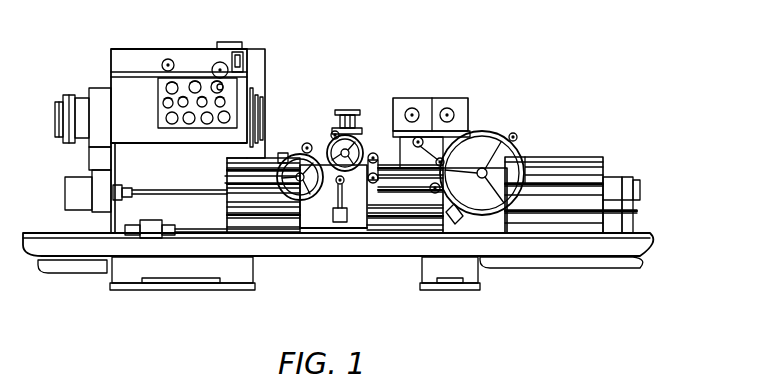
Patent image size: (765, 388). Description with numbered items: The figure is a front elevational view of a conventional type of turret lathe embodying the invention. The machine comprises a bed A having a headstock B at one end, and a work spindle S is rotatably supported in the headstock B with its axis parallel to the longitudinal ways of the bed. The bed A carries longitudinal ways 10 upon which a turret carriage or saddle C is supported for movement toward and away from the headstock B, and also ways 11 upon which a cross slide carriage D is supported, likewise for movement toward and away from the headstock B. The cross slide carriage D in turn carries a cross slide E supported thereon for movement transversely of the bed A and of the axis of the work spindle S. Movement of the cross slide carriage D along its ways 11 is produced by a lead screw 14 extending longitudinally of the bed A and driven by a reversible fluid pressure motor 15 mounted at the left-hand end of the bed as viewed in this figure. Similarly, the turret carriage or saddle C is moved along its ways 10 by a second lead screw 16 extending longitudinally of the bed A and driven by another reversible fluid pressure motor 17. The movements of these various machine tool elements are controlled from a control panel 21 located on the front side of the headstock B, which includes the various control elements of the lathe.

The bed A is at (310, 251).
The headstock B is at (138, 66).
The turret carriage or saddle C is at (500, 152).
The cross slide carriage D is at (357, 220).
The cross slide E is at (363, 110).
The work spindle S is at (266, 110).
The longitudinal ways 10 is at (593, 158).
The ways 11 is at (231, 172).
The lead screw 14 is at (182, 190).
The reversible fluid pressure motor 15 is at (67, 190).
The lead screw 16 is at (215, 229).
The reversible fluid pressure motor 17 is at (157, 214).
The control panel 21 is at (226, 92).